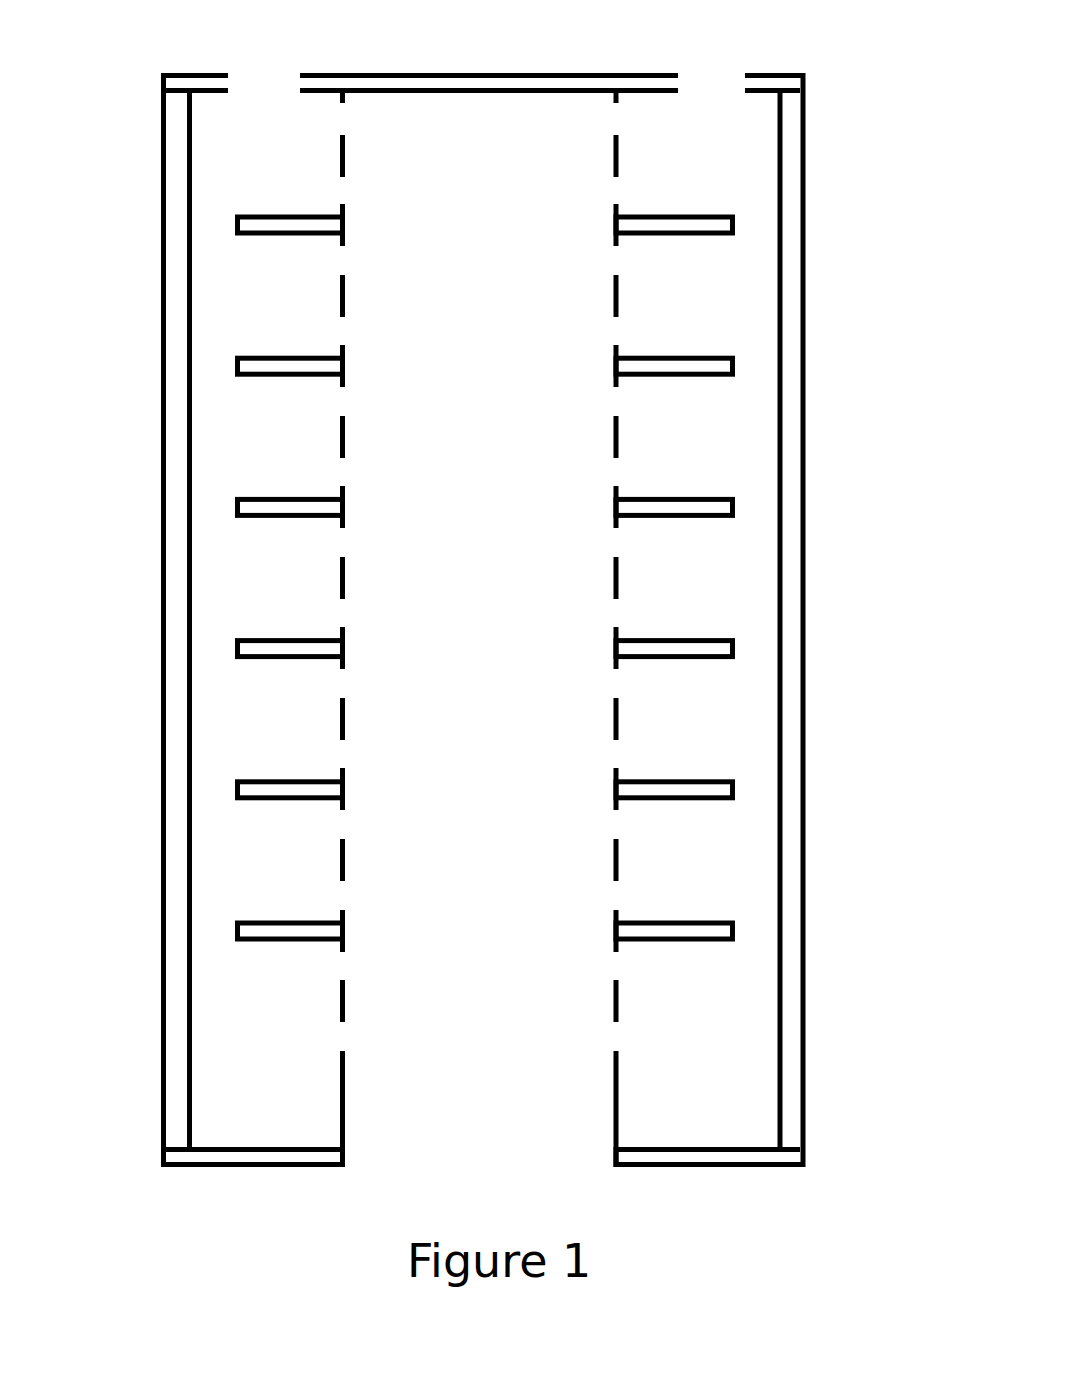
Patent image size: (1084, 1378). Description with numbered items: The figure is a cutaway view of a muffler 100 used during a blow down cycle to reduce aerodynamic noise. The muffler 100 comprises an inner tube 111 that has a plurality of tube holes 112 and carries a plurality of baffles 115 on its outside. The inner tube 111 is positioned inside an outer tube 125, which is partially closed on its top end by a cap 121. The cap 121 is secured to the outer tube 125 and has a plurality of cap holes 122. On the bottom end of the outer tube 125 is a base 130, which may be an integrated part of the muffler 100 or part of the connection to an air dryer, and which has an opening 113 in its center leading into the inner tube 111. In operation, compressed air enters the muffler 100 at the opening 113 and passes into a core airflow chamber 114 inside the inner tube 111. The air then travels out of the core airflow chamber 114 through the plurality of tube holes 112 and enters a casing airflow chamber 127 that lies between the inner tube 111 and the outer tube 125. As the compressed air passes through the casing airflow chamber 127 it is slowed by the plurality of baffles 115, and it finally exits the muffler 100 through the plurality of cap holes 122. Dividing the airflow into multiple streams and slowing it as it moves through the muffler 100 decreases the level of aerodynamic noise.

The muffler 100 is at (338, 583).
The inner tube 111 is at (337, 158).
The tube holes 112 is at (337, 260).
The opening 113 is at (493, 1157).
The core airflow chamber 114 is at (478, 619).
The baffles 115 is at (232, 365).
The cap 121 is at (805, 82).
The cap holes 122 is at (707, 78).
The outer tube 125 is at (806, 580).
The casing airflow chamber 127 is at (705, 707).
The base 130 is at (158, 1157).